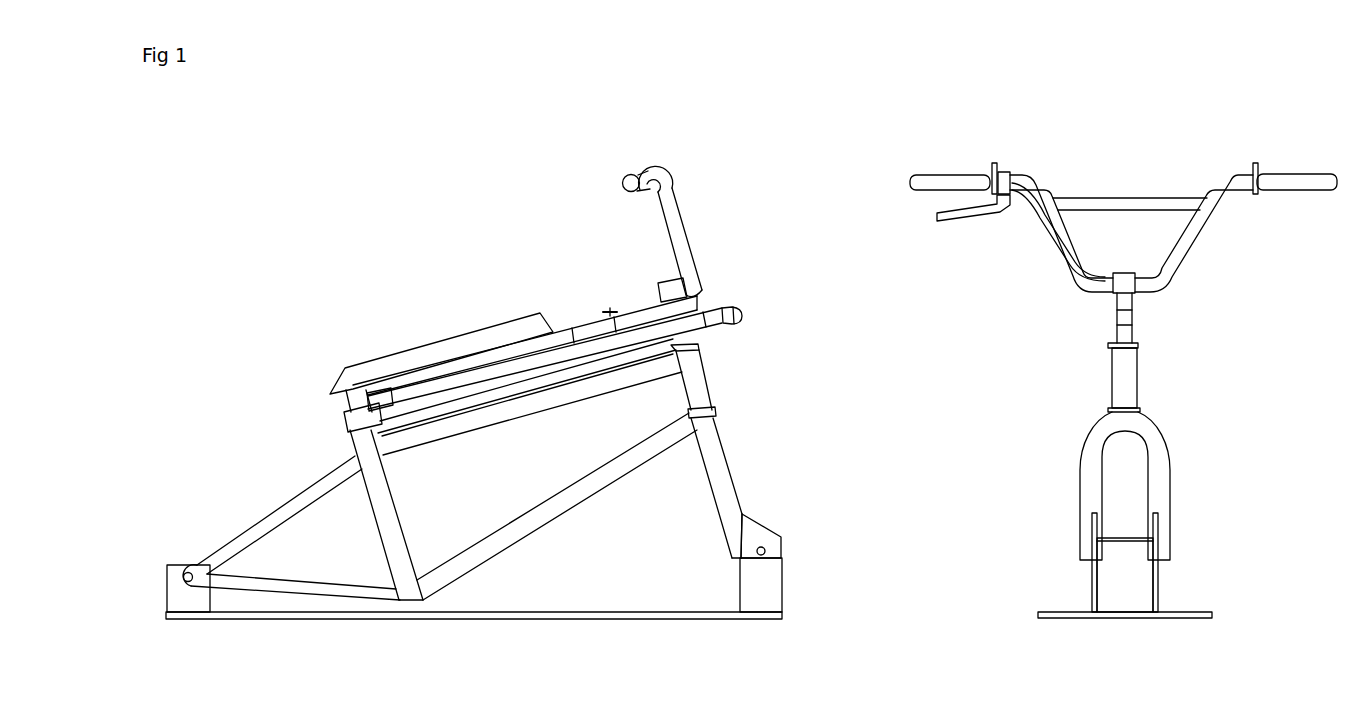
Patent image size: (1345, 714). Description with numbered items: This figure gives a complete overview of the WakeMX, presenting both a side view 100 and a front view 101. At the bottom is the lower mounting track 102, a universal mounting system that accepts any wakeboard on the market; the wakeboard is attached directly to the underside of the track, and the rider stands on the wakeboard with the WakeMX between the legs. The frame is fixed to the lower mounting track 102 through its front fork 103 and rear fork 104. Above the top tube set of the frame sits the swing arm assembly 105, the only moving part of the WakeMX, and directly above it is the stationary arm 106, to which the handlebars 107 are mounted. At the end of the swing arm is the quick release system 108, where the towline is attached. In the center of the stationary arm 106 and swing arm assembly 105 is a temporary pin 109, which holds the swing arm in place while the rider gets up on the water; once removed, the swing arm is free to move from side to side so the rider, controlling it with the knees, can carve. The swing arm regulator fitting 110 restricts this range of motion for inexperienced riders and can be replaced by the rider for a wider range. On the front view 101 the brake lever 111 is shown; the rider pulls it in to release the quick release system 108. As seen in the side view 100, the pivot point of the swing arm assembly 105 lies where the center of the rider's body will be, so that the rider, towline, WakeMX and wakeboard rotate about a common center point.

The side view 100 is at (474, 630).
The front view 101 is at (1125, 630).
The lower mounting track 102 is at (788, 600).
The front fork 103 is at (788, 541).
The rear fork 104 is at (160, 575).
The swing arm assembly 105 is at (720, 335).
The stationary arm 106 is at (698, 300).
The handlebars 107 is at (687, 222).
The quick release system 108 is at (747, 316).
The temporary pin 109 is at (615, 300).
The swing arm regulator fitting 110 is at (335, 423).
The brake lever 111 is at (1021, 232).